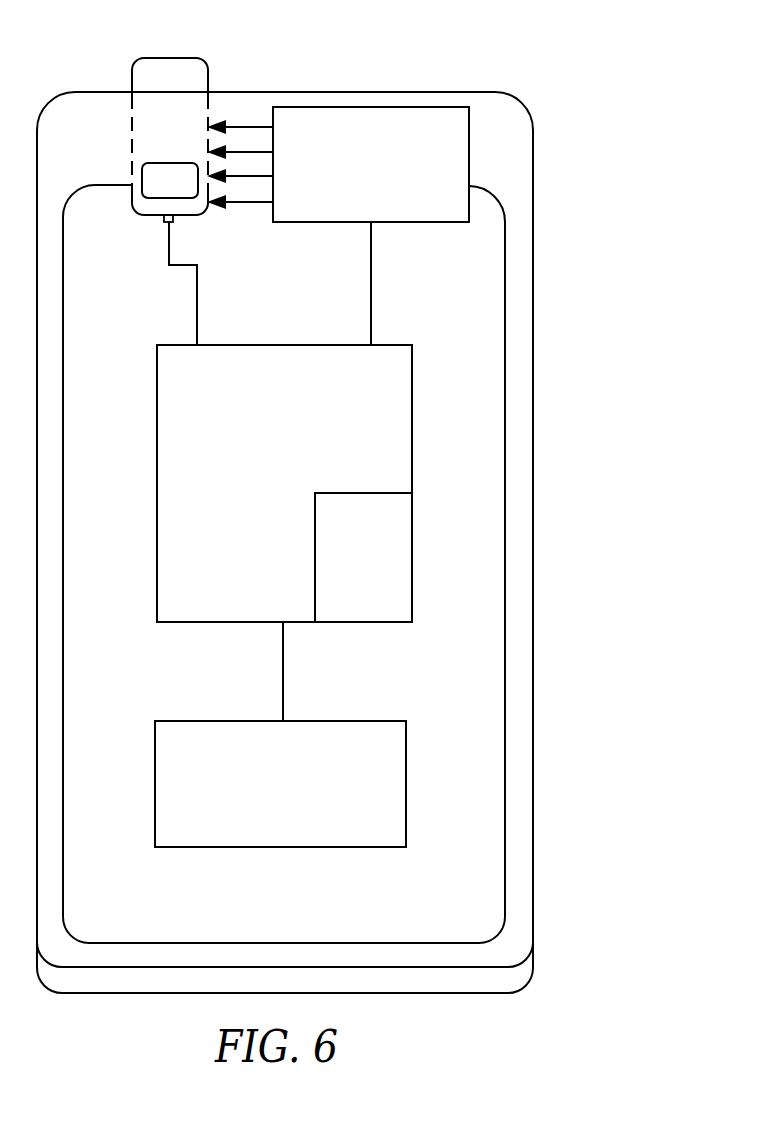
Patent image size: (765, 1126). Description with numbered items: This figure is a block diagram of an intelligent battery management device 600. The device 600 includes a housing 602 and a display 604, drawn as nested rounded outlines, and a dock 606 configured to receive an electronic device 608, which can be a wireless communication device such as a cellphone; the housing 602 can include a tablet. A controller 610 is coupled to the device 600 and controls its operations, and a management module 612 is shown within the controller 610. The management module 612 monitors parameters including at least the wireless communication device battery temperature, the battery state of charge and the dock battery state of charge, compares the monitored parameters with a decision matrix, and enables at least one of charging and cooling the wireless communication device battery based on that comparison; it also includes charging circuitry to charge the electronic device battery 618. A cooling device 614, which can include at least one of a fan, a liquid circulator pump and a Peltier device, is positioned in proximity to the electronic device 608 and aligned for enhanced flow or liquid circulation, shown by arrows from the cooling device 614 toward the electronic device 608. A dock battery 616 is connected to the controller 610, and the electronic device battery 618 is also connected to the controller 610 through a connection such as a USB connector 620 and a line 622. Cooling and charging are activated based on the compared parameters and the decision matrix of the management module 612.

The intelligent battery management device 600 is at (584, 54).
The housing 602 is at (520, 401).
The display 604 is at (492, 281).
The dock 606 is at (209, 116).
The electronic device 608 is at (170, 58).
The controller 610 is at (157, 486).
The management module 612 is at (412, 559).
The cooling device 614 is at (470, 148).
The dock battery 616 is at (406, 782).
The electronic device battery 618 is at (172, 163).
The USB connector 620 is at (166, 228).
The line 622 is at (184, 268).